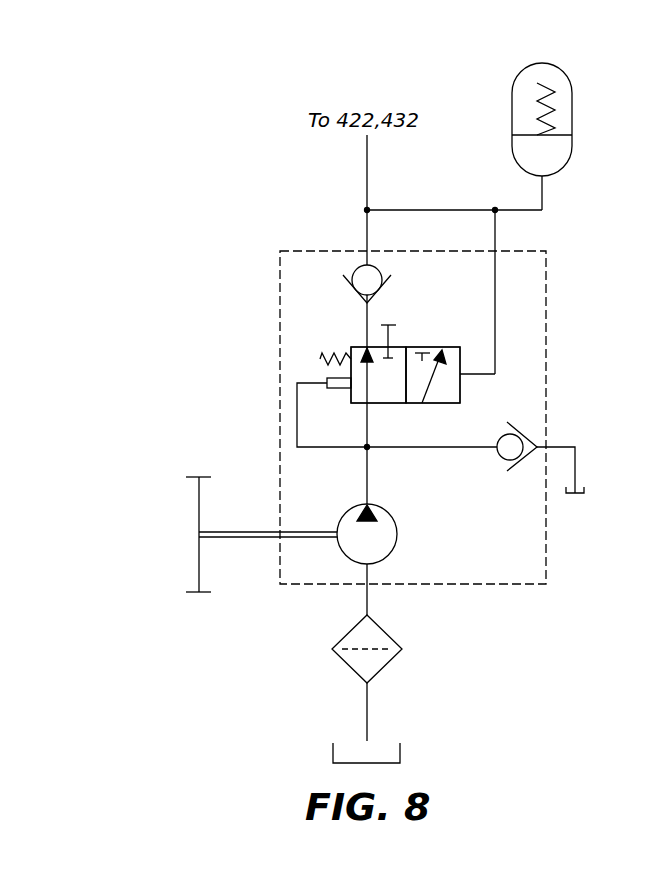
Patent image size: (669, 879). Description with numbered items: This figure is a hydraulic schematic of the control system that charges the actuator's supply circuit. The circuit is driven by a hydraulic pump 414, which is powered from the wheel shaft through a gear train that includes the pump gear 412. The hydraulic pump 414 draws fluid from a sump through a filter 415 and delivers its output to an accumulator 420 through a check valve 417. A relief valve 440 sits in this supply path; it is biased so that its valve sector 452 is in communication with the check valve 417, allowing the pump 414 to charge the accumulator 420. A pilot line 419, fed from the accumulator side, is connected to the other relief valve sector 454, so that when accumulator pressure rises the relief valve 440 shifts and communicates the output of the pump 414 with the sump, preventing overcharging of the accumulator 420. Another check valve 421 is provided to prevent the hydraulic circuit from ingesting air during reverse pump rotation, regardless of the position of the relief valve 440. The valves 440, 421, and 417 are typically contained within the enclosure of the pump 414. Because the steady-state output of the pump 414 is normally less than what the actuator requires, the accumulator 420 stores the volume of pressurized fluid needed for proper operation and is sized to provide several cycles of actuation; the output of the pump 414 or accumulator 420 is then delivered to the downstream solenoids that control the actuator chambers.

The pump gear 412 is at (199, 493).
The hydraulic pump 414 is at (392, 508).
The filter 415 is at (380, 630).
The check valve 417 is at (382, 288).
The pilot line 419 is at (495, 234).
The accumulator 420 is at (572, 128).
The check valve 421 is at (513, 428).
The relief valve 440 is at (352, 397).
The valve sector 452 is at (400, 347).
The relief valve sector 454 is at (432, 347).